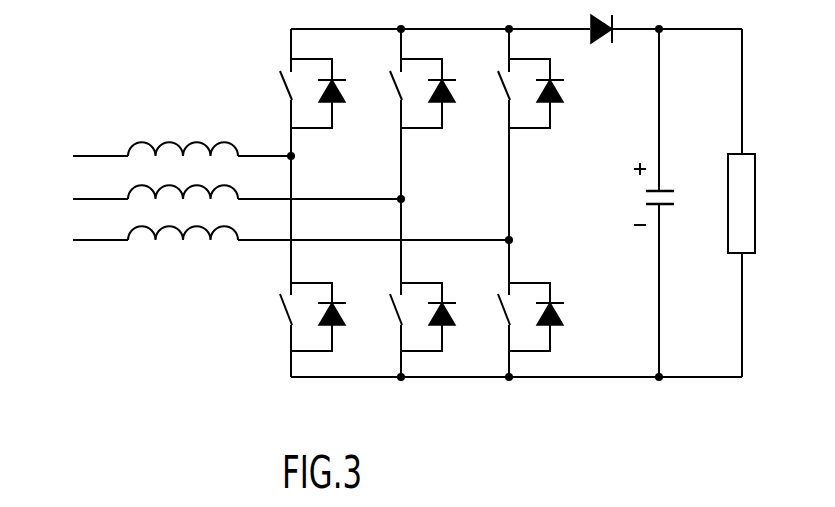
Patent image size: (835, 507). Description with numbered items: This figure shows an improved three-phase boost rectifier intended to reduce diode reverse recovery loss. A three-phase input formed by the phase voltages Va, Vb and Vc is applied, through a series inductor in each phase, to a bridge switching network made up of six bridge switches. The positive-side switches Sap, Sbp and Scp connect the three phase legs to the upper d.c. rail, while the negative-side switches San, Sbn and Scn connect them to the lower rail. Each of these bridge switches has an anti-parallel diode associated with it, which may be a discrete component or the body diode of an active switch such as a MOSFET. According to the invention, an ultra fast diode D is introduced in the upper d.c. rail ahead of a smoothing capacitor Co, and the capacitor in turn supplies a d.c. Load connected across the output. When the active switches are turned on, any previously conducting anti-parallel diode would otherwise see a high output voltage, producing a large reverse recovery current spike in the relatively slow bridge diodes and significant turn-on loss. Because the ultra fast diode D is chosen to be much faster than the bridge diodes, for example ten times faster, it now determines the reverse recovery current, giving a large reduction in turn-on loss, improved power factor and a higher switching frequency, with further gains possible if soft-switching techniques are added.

The phase a input voltage Va is at (162, 155).
The phase b input voltage Vb is at (217, 198).
The phase c input voltage Vc is at (271, 242).
The bridge switch Sap is at (295, 93).
The bridge switch Sbp is at (405, 93).
The bridge switch Scp is at (513, 93).
The bridge switch San is at (295, 317).
The bridge switch Sbn is at (405, 317).
The bridge switch Scn is at (514, 317).
The ultra fast diode D is at (601, 43).
The smoothing capacitor Co is at (661, 203).
The d.c. load Load is at (766, 203).